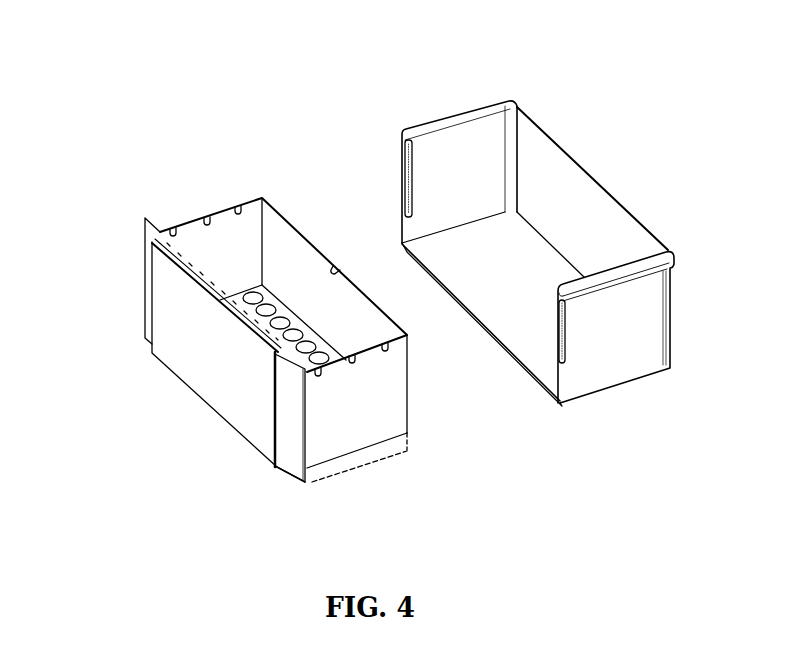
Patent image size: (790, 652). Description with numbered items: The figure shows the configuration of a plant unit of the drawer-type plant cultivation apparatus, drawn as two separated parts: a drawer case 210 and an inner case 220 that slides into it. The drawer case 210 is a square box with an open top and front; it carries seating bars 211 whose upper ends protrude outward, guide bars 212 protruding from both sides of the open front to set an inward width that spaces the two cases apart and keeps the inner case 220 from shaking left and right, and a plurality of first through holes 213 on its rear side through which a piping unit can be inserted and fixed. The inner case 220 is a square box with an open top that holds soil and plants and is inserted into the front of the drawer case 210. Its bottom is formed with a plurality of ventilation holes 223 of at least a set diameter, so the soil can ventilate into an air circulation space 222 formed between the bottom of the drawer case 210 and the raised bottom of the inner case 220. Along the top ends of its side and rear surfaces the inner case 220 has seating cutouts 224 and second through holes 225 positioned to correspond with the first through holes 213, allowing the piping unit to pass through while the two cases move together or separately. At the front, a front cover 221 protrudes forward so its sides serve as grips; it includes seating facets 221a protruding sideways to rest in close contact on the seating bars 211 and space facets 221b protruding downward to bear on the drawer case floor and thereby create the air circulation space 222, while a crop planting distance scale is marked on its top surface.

The drawer case 210 is at (429, 97).
The seating bars 211 is at (477, 109).
The guide bars 212 is at (403, 178).
The first through holes 213 is at (592, 266).
The inner case 220 is at (157, 164).
The front cover 221 is at (228, 394).
The seating facets 221a is at (145, 280).
The space facets 221b is at (297, 479).
The air circulation space 222 is at (347, 466).
The ventilation holes 223 is at (281, 321).
The seating cutouts 224 is at (173, 226).
The second through holes 225 is at (318, 362).